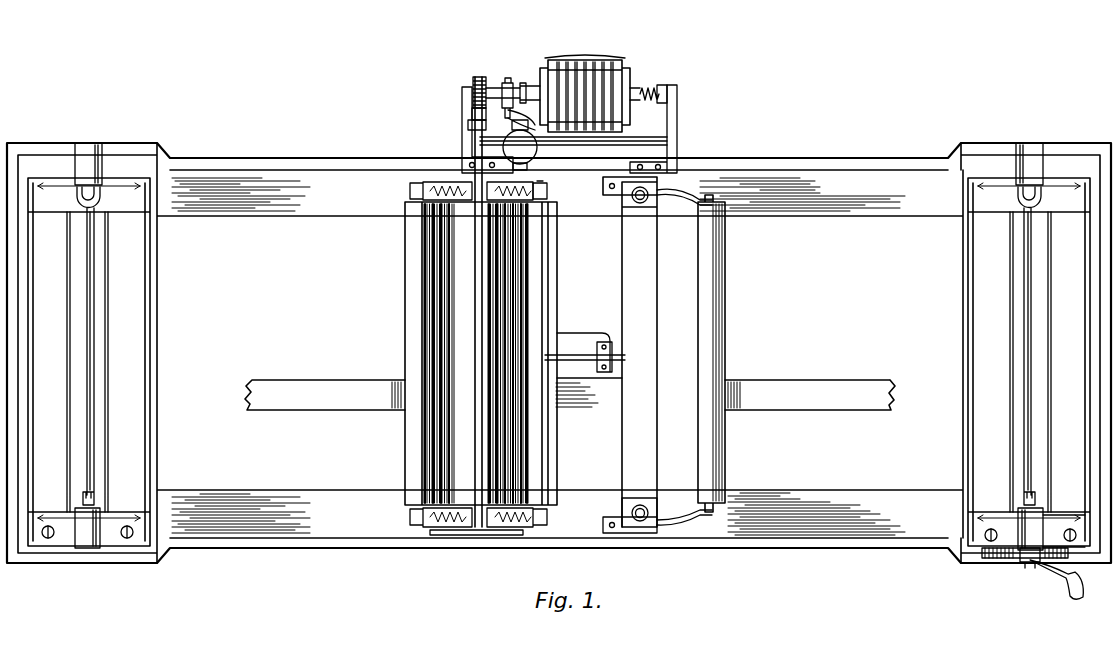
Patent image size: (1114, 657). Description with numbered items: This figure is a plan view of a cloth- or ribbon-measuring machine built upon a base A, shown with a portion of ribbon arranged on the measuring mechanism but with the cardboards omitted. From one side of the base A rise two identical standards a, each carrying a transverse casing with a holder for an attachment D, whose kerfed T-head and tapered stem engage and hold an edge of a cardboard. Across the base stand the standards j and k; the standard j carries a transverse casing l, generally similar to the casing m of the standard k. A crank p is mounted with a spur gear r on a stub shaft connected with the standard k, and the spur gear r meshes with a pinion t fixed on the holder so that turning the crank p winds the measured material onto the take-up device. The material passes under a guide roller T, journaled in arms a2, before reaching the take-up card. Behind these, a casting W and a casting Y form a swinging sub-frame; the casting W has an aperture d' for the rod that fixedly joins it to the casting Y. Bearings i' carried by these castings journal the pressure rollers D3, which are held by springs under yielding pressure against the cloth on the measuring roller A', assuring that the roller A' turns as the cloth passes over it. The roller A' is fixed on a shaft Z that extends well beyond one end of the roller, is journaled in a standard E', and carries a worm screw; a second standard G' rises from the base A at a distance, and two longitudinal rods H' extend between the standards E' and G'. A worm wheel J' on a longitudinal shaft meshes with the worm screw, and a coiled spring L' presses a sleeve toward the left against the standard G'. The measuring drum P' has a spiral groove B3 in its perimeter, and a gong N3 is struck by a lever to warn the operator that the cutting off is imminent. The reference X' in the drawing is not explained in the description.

The standard a is at (572, 176).
The attachment D is at (87, 208).
The casing l is at (77, 532).
The standard j is at (113, 530).
The casing m is at (1023, 518).
The standard k is at (1048, 528).
The spur gear r is at (980, 552).
The pinion t is at (1018, 553).
The crank p is at (1053, 570).
The pressure roller D3 is at (543, 293).
The cloth-measuring roller A' is at (442, 353).
The right roller X' is at (487, 353).
The shaft Z is at (475, 140).
The casting W is at (443, 182).
The bearing i' is at (548, 187).
The casting Y is at (457, 527).
The guide roller T is at (713, 313).
The arm a2 is at (690, 188).
The standard E' is at (480, 114).
The aperture d' is at (445, 116).
The worm wheel J' is at (487, 82).
The gong N3 is at (552, 155).
The measuring drum P' is at (575, 85).
The spiral groove B3 is at (607, 60).
The coiled spring L' is at (651, 82).
The standard G' is at (669, 129).
The longitudinal rod H' is at (573, 126).
The base A is at (840, 186).